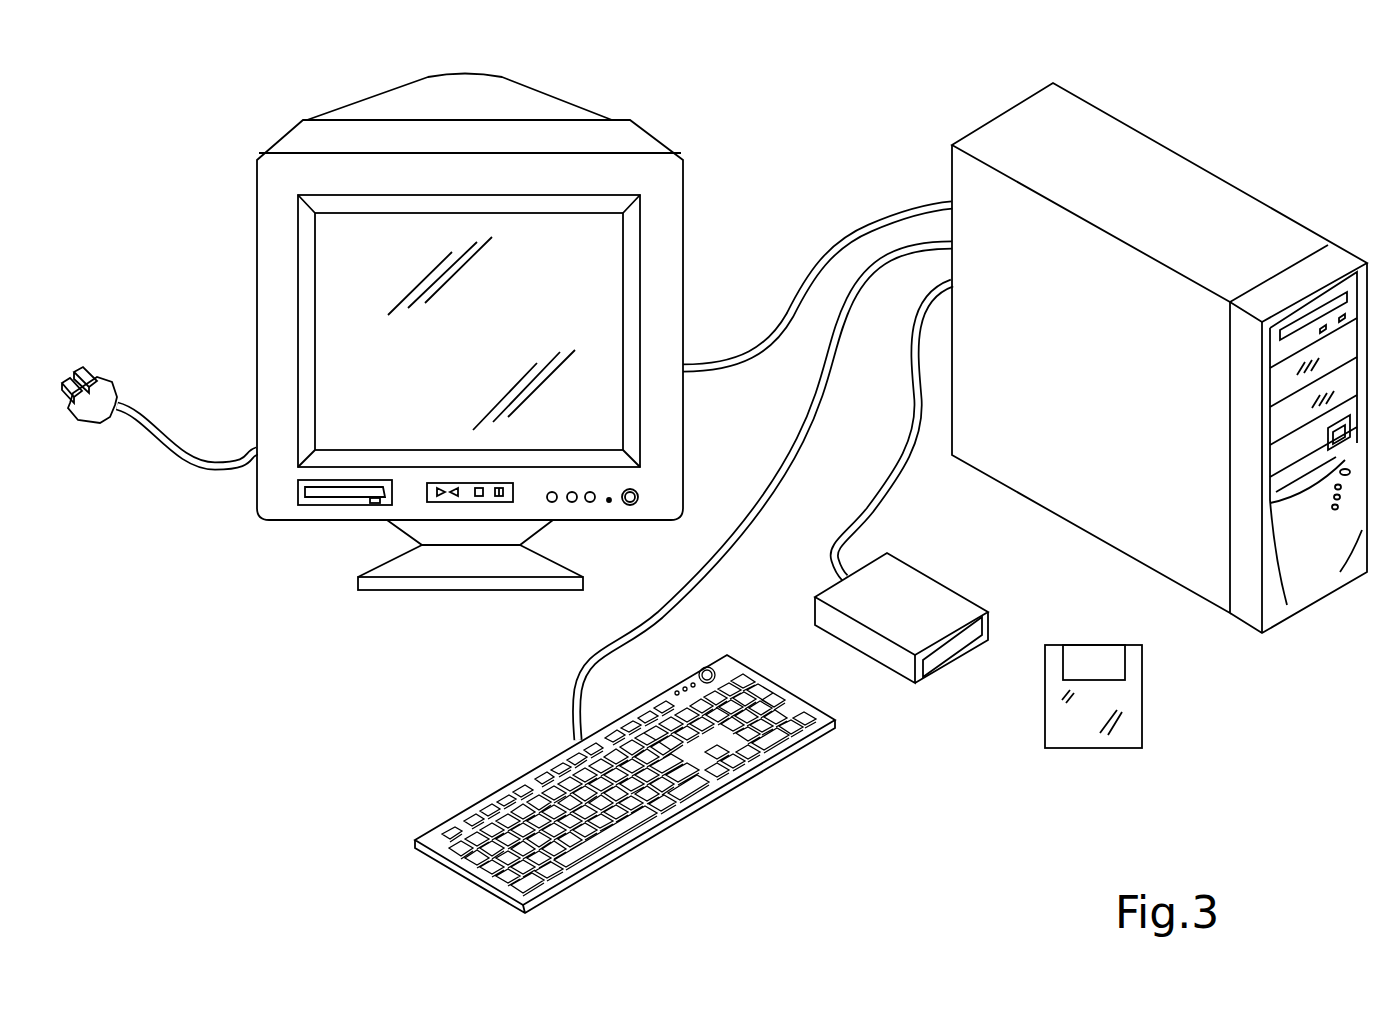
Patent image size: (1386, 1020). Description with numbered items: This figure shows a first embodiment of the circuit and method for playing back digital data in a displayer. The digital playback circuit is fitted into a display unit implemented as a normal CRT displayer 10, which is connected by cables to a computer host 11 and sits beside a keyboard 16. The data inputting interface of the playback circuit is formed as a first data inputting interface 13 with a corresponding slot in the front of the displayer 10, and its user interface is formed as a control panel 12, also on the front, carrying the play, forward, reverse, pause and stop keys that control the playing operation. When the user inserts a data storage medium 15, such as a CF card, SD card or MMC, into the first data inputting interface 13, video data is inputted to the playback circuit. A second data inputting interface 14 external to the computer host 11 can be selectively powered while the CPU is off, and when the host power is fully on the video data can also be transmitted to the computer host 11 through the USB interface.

The CRT displayer 10 is at (592, 135).
The computer host 11 is at (1163, 165).
The control panel 12 is at (440, 502).
The first data inputting interface 13 is at (313, 505).
The second data inputting interface 14 is at (923, 592).
The data storage medium 15 is at (1045, 713).
The keyboard 16 is at (687, 818).